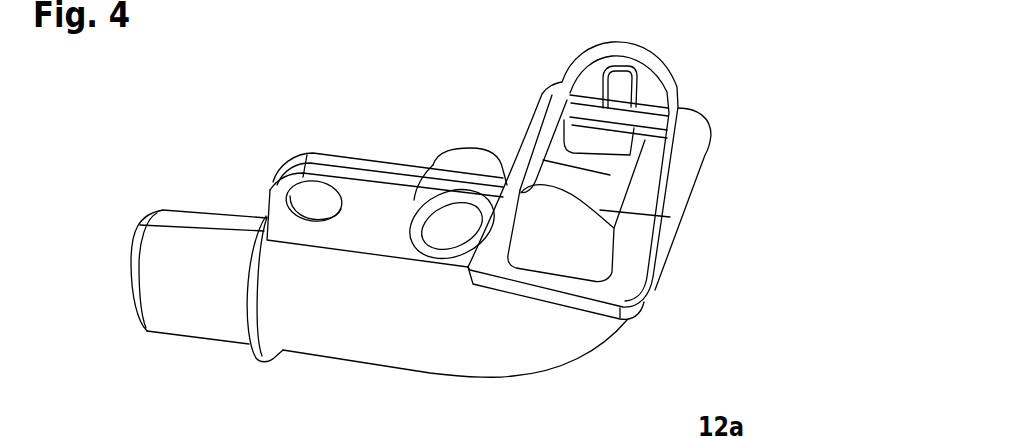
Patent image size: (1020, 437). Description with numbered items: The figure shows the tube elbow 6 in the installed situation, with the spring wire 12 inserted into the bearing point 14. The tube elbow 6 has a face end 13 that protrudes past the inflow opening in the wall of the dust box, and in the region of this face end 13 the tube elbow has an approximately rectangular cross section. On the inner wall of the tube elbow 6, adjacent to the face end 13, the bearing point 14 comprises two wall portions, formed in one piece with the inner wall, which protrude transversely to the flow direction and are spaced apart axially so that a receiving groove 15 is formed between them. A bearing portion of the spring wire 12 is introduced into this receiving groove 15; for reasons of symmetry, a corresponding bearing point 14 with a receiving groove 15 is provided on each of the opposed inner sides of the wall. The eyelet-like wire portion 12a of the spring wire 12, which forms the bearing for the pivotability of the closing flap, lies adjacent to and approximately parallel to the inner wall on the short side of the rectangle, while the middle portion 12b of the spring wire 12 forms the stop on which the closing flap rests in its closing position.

The tube elbow 6 is at (338, 340).
The spring wire 12 is at (538, 103).
The eyelet-like wire portion 12a is at (637, 73).
The middle portion 12b is at (588, 148).
The face end 13 is at (665, 108).
The bearing point 14 is at (558, 88).
The receiving groove 15 is at (663, 130).